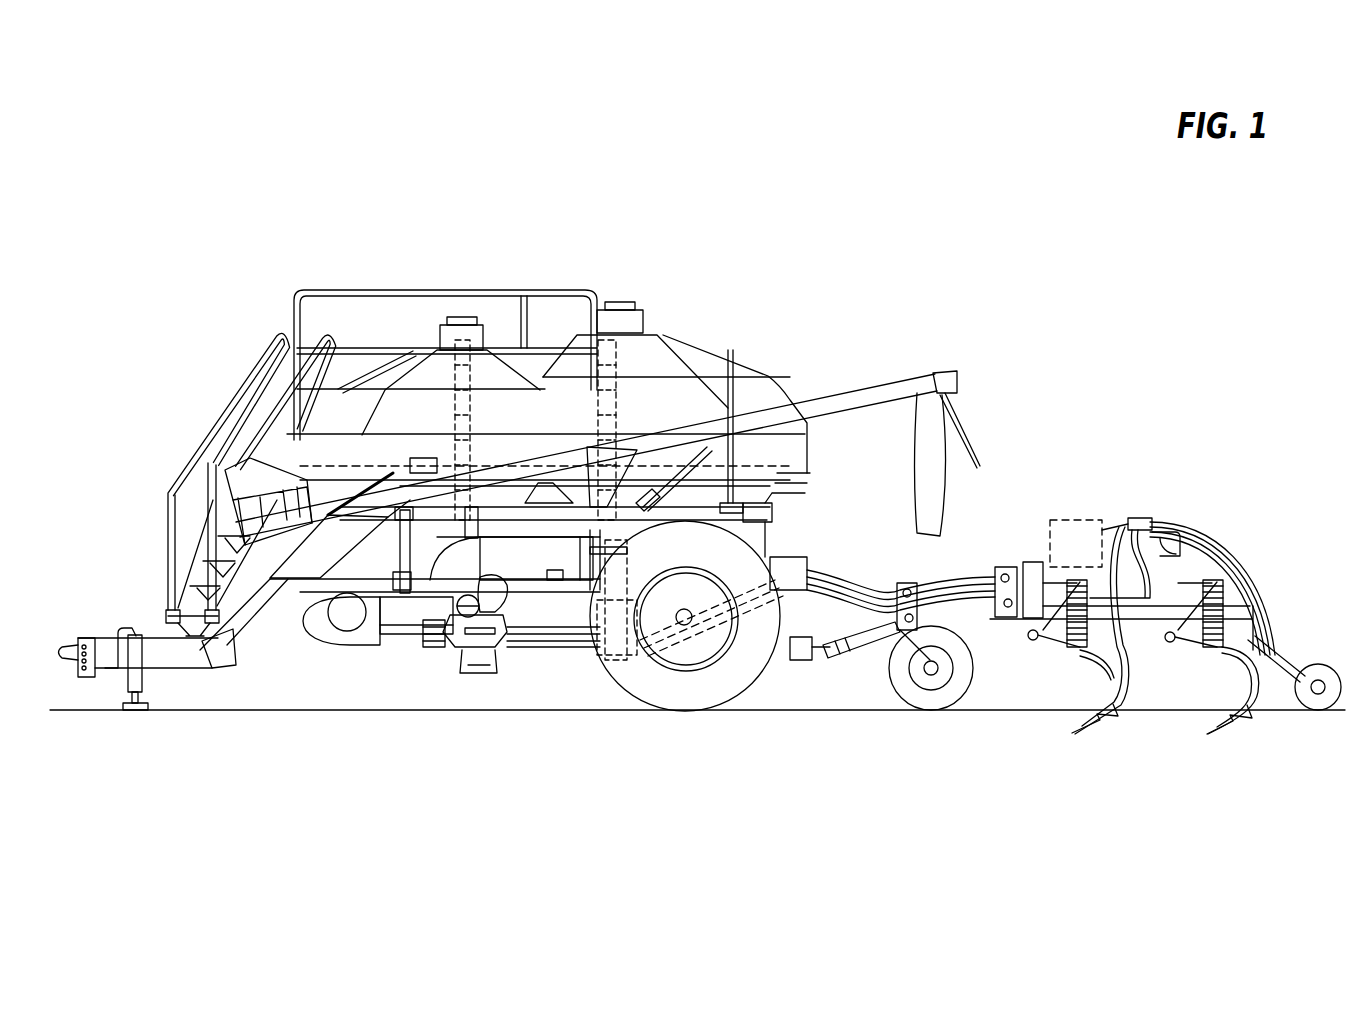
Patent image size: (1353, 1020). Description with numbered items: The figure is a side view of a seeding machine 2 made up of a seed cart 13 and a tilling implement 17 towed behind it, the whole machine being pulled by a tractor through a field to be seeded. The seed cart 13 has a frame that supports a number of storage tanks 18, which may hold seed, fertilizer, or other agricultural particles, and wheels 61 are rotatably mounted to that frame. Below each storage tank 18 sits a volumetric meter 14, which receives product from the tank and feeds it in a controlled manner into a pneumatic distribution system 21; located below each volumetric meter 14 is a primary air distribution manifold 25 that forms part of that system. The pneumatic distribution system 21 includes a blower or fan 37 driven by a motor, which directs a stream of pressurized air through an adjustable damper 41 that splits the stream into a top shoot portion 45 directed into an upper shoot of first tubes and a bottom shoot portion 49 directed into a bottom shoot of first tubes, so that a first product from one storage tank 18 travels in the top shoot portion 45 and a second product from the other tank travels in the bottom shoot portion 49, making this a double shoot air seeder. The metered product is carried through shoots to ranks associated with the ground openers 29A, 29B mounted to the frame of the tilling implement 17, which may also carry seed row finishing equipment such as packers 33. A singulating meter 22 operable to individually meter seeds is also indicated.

The seeding machine 2 is at (992, 340).
The seed cart 13 is at (810, 378).
The volumetric meter 14 is at (578, 610).
The tilling implement 17 is at (1200, 456).
The storage tanks 18 is at (407, 425).
The pneumatic distribution system 21 is at (298, 660).
The singulating meter 22 is at (1063, 558).
The primary air distribution manifold 25 is at (467, 645).
The ground opener 29A is at (1093, 732).
The ground opener 29B is at (1230, 732).
The packers 33 is at (1320, 663).
The fan 37 is at (312, 615).
The adjustable damper 41 is at (388, 645).
The top shoot portion 45 is at (425, 608).
The bottom shoot portion 49 is at (443, 633).
The wheels 61 is at (720, 697).